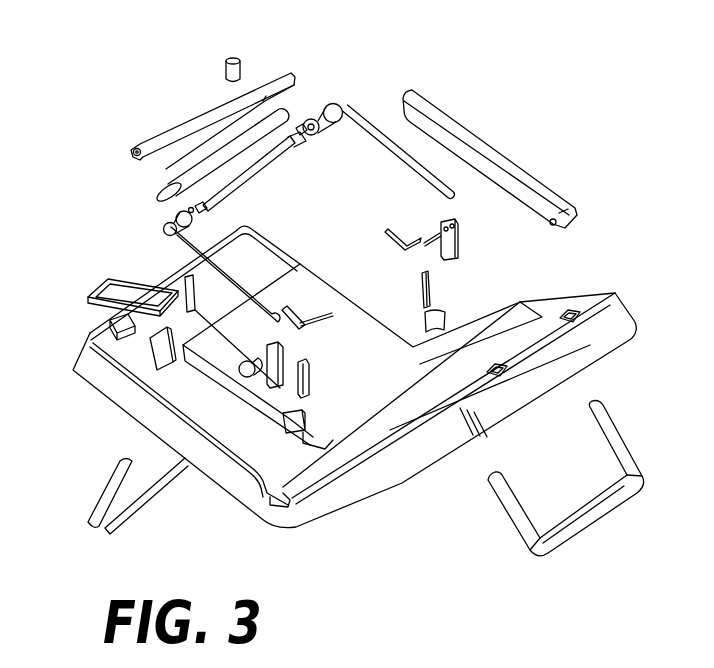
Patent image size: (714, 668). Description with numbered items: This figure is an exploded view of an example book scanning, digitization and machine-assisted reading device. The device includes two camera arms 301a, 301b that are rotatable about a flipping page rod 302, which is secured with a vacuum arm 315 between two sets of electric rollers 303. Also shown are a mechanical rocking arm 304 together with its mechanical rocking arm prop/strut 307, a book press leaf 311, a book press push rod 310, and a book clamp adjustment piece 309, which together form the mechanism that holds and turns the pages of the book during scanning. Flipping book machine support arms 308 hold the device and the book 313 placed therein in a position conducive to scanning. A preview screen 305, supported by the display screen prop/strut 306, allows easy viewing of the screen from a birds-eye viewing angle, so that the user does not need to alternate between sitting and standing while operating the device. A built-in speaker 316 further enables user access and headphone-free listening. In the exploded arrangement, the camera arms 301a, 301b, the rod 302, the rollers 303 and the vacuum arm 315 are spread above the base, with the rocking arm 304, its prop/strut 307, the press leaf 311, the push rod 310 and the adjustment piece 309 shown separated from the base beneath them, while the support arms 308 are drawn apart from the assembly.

The camera arm 301a is at (213, 103).
The camera arm 301b is at (527, 180).
The flipping page rod 302 is at (195, 167).
The electric rollers 303 is at (326, 108).
The mechanical rocking arm 304 is at (167, 243).
The preview screen 305 is at (115, 289).
The display screen prop/strut 306 is at (88, 367).
The mechanical rocking arm prop/strut 307 is at (268, 380).
The flipping book machine support arms 308 is at (90, 530).
The book clamp adjustment piece 309 is at (233, 357).
The book press push rod 310 is at (310, 332).
The book press leaf 311 is at (305, 397).
The book 313 is at (450, 343).
The vacuum arm 315 is at (298, 127).
The built-in speaker 316 is at (227, 55).